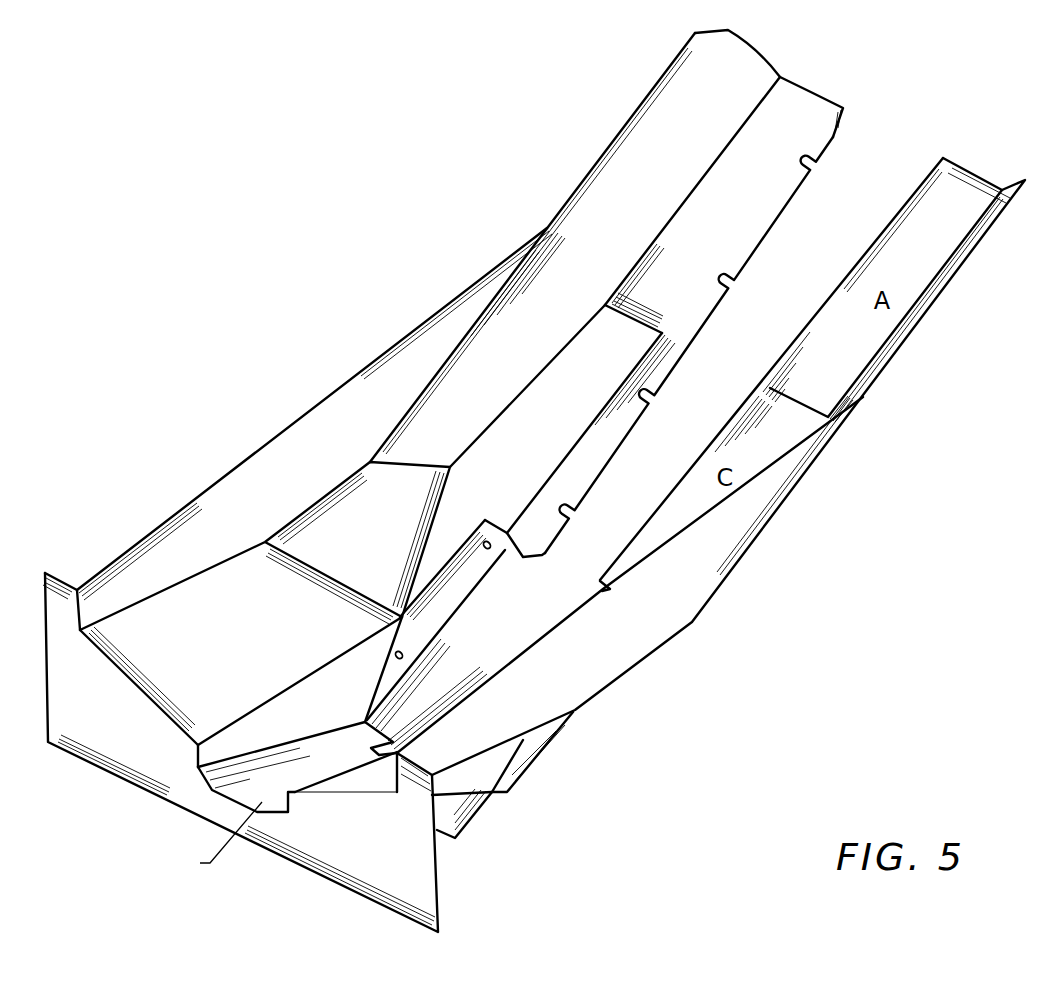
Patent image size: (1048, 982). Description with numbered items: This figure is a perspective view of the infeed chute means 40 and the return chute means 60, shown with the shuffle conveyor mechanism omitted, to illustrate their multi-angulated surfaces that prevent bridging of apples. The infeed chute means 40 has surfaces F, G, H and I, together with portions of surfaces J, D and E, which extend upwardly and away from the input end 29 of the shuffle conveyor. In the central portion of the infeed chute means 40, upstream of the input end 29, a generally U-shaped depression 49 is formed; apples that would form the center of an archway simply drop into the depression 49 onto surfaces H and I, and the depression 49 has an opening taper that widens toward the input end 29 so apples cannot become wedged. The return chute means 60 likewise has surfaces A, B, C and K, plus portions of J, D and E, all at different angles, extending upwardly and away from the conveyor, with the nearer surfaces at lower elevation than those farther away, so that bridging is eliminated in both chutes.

The return chute means 60 is at (621, 128).
The infeed chute means 40 is at (187, 505).
The generally U-shaped depression 49 is at (224, 768).
The input end 29 is at (471, 647).